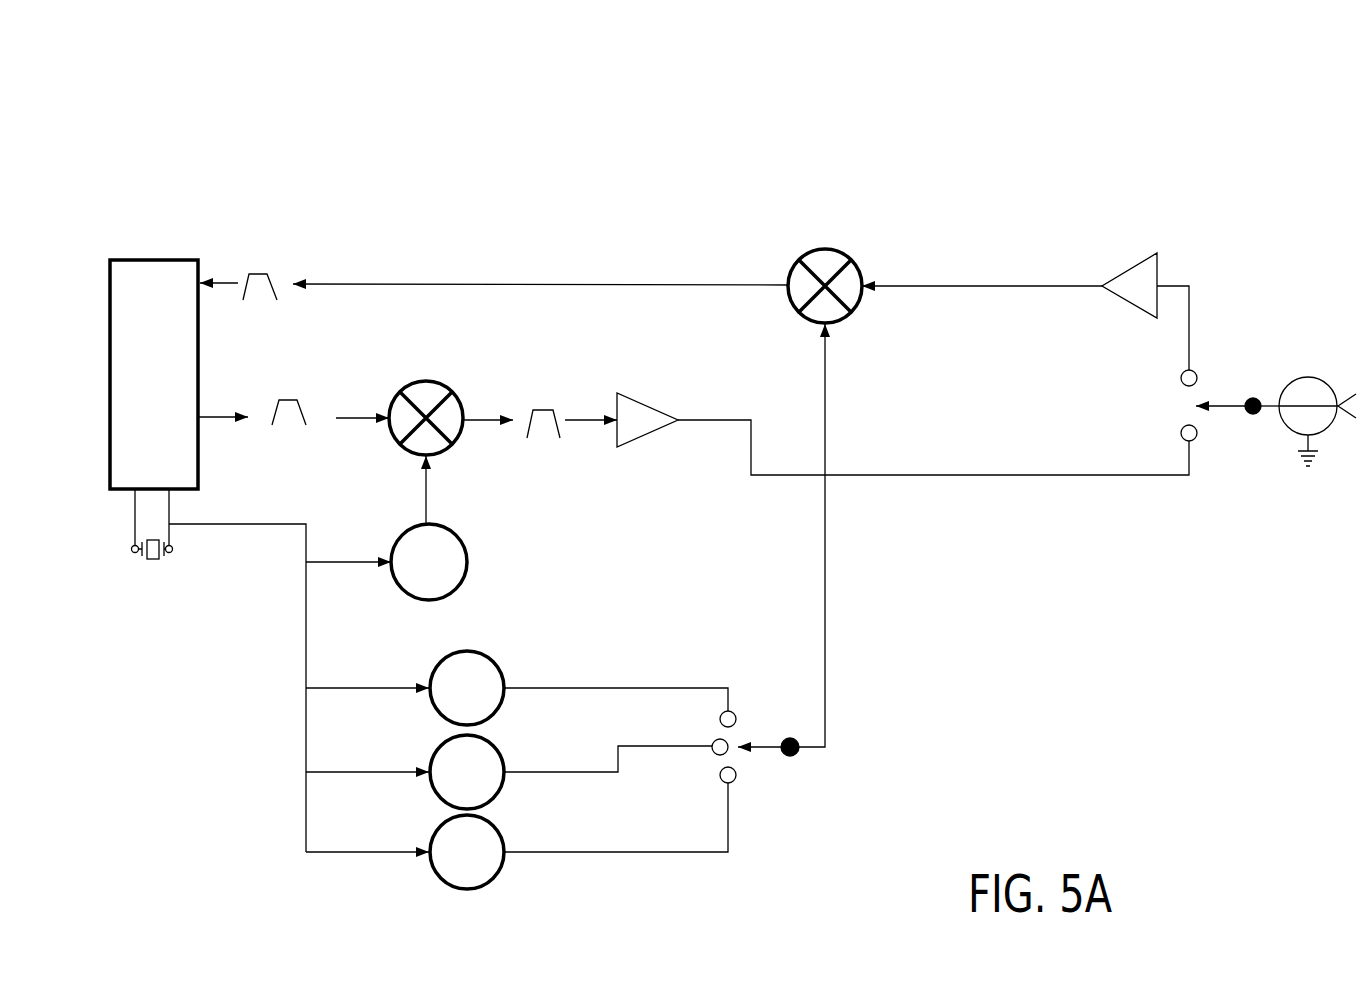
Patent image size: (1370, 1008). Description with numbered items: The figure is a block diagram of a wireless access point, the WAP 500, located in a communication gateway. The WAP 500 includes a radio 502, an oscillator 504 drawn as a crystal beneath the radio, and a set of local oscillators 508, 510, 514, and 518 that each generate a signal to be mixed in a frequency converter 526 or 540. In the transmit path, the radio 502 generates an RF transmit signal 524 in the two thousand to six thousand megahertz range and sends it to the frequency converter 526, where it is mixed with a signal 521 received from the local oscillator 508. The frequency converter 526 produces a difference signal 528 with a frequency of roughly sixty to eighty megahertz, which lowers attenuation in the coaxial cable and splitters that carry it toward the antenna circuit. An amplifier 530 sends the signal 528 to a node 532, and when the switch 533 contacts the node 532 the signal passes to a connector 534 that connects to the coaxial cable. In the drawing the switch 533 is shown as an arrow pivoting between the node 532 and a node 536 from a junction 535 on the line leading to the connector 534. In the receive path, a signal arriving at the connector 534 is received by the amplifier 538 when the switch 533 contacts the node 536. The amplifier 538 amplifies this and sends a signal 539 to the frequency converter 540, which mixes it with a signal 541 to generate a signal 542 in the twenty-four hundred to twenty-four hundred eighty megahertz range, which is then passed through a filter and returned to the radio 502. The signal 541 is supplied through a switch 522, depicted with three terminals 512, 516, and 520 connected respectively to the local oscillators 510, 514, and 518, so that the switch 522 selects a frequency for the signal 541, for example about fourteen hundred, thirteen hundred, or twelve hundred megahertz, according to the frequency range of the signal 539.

The WAP 500 is at (817, 135).
The radio 502 is at (154, 374).
The oscillator 504 is at (153, 562).
The local oscillator 508 is at (429, 562).
The local oscillator 510 is at (579, 688).
The first switch terminal 512 is at (735, 712).
The local oscillator 514 is at (571, 772).
The switch common terminal 516 is at (712, 742).
The local oscillator 518 is at (579, 836).
The third switch terminal 520 is at (722, 782).
The signal 521 is at (428, 478).
The switch 522 is at (780, 758).
The RF transmit signal 524 is at (290, 395).
The frequency converter 526 is at (430, 381).
The signal 528 is at (545, 405).
The amplifier 530 is at (621, 420).
The node 532 is at (1180, 428).
The switch 533 is at (1235, 400).
The connector 534 is at (1315, 378).
The antenna node 535 is at (1254, 416).
The node 536 is at (1192, 370).
The amplifier 538 is at (1145, 311).
The signal 539 is at (978, 284).
The frequency converter 540 is at (822, 250).
The signal 541 is at (826, 415).
The signal 542 is at (258, 270).